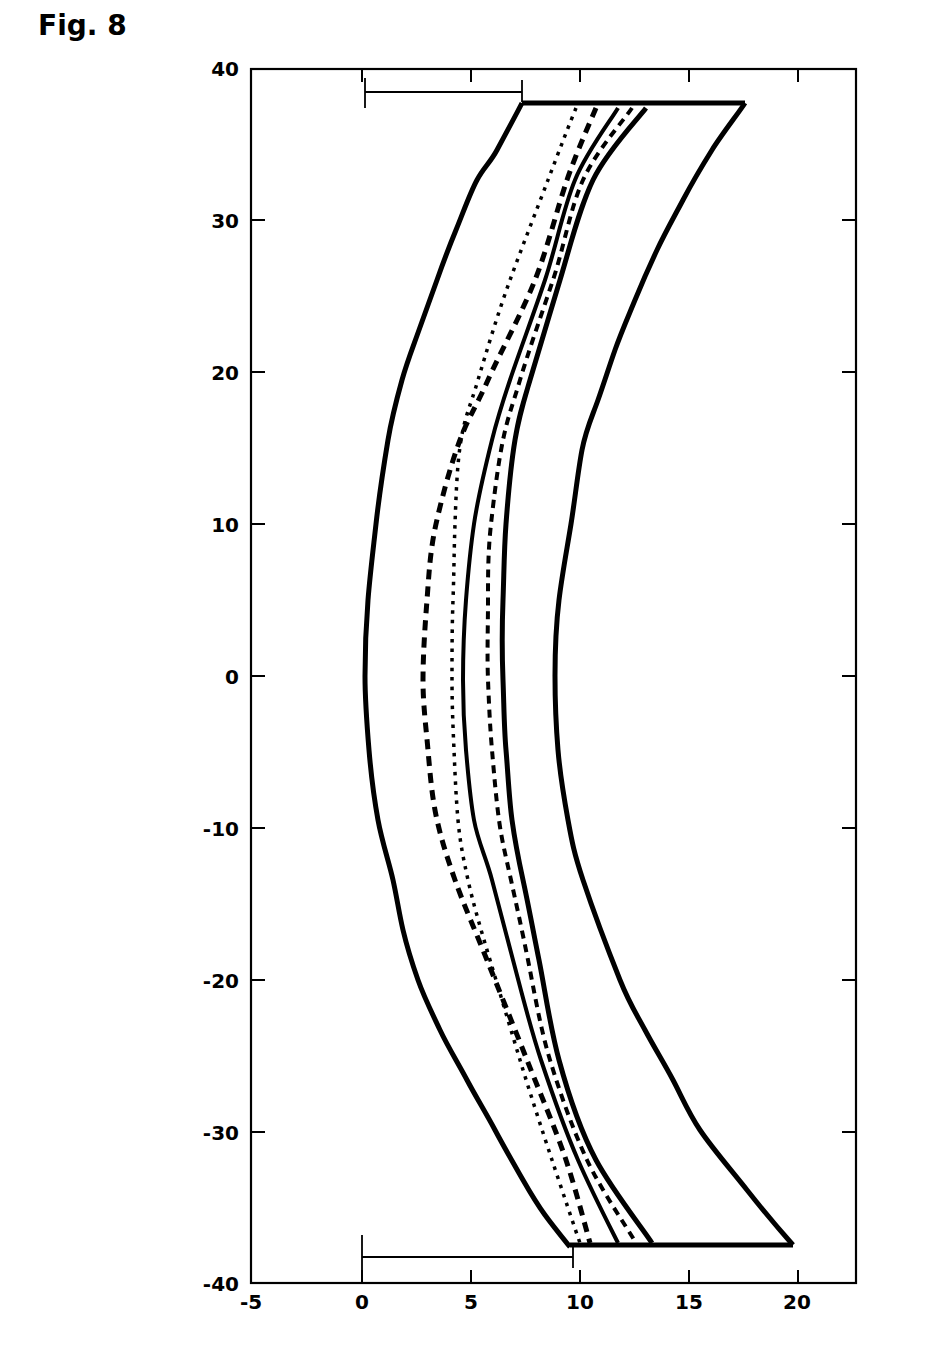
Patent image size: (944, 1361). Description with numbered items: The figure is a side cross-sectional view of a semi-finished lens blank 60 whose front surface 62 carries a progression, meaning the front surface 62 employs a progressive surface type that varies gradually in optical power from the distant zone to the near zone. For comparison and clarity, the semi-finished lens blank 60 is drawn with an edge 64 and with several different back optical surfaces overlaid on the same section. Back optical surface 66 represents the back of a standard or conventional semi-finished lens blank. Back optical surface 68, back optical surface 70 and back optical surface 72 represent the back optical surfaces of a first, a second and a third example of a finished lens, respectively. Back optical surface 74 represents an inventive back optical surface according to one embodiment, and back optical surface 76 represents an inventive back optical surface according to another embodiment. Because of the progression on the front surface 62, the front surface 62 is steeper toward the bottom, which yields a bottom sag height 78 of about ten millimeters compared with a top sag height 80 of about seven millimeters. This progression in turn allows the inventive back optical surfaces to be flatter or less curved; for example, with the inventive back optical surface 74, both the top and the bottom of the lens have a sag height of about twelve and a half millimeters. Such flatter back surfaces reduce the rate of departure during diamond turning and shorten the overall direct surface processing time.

The semi-finished lens blank 60 is at (688, 453).
The front surface 62 is at (405, 937).
The edge 64 is at (622, 103).
The back optical surface 66 is at (587, 878).
The back optical surface 68 is at (450, 462).
The back optical surface 70 is at (443, 485).
The back optical surface 72 is at (488, 525).
The back optical surface 74 is at (460, 594).
The back optical surface 76 is at (503, 527).
The bottom sag height 78 is at (448, 1257).
The top sag height 80 is at (408, 92).